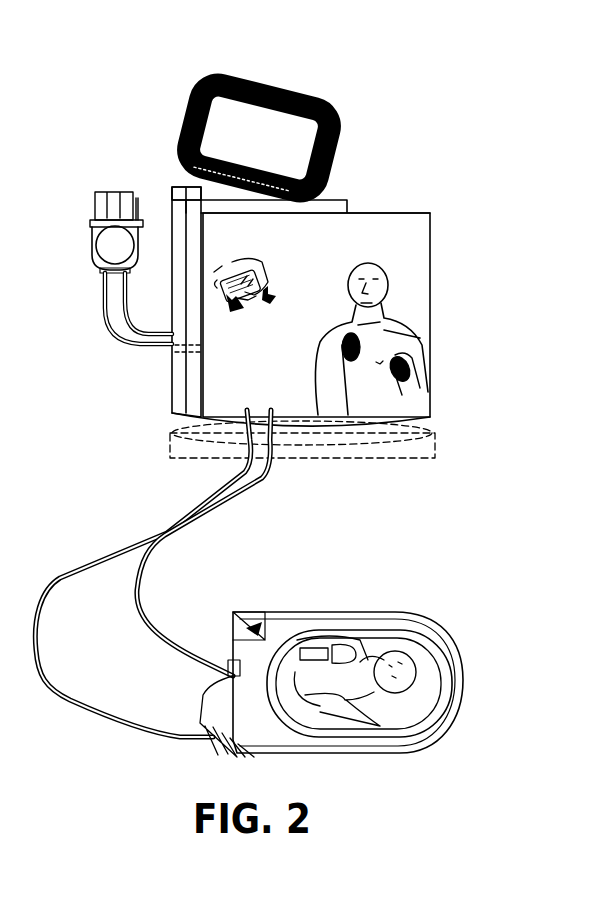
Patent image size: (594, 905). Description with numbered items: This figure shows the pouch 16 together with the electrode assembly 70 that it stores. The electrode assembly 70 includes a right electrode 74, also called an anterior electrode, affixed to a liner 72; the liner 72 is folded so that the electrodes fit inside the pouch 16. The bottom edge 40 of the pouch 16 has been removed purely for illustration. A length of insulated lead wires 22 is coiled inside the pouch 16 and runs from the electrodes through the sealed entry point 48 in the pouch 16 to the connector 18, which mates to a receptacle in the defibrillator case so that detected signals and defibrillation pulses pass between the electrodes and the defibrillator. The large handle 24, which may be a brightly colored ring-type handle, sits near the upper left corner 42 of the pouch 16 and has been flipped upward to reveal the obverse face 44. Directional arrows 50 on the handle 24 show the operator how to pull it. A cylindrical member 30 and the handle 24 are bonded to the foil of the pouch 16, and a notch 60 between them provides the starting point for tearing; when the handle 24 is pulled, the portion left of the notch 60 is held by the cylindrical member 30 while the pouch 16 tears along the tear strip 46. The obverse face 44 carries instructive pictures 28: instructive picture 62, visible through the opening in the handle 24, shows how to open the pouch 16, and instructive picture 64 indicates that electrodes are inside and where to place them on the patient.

The pouch 16 is at (314, 268).
The connector 18 is at (92, 242).
The insulated lead wires 22 is at (137, 606).
The handle 24 is at (340, 156).
The instructive pictures 28 is at (370, 228).
The cylindrical member 30 is at (170, 187).
The bottom edge 40 is at (437, 447).
The upper left corner 42 is at (158, 204).
The obverse face 44 is at (420, 238).
The tear strip 46 is at (184, 390).
The sealed entry point 48 is at (155, 346).
The directional arrows 50 is at (229, 68).
The notch 60 is at (193, 234).
The instructive picture 62 is at (254, 331).
The instructive picture 64 is at (310, 343).
The electrode assembly 70 is at (383, 670).
The liner 72 is at (458, 712).
The right electrode 74 is at (362, 634).